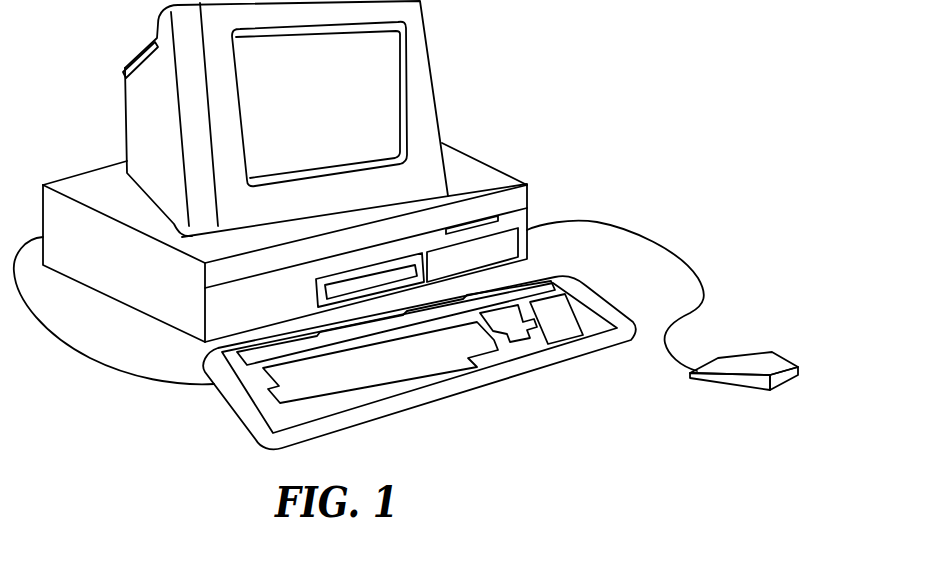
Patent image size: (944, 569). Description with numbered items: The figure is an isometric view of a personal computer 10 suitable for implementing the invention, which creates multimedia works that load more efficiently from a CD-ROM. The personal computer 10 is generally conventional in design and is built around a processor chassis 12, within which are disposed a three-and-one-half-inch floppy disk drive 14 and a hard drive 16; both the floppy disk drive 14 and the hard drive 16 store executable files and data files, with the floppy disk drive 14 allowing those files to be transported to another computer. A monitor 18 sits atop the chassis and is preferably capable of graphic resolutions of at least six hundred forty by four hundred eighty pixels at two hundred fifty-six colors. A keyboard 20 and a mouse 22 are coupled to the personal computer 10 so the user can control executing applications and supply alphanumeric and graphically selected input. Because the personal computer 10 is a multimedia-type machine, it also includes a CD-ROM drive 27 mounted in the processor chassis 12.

The personal computer 10 is at (436, 421).
The processor chassis 12 is at (508, 218).
The floppy disk drive 14 is at (472, 217).
The hard drive 16 is at (497, 245).
The monitor 18 is at (430, 60).
The keyboard 20 is at (520, 375).
The mouse 22 is at (777, 388).
The CD-ROM drive 27 is at (316, 296).